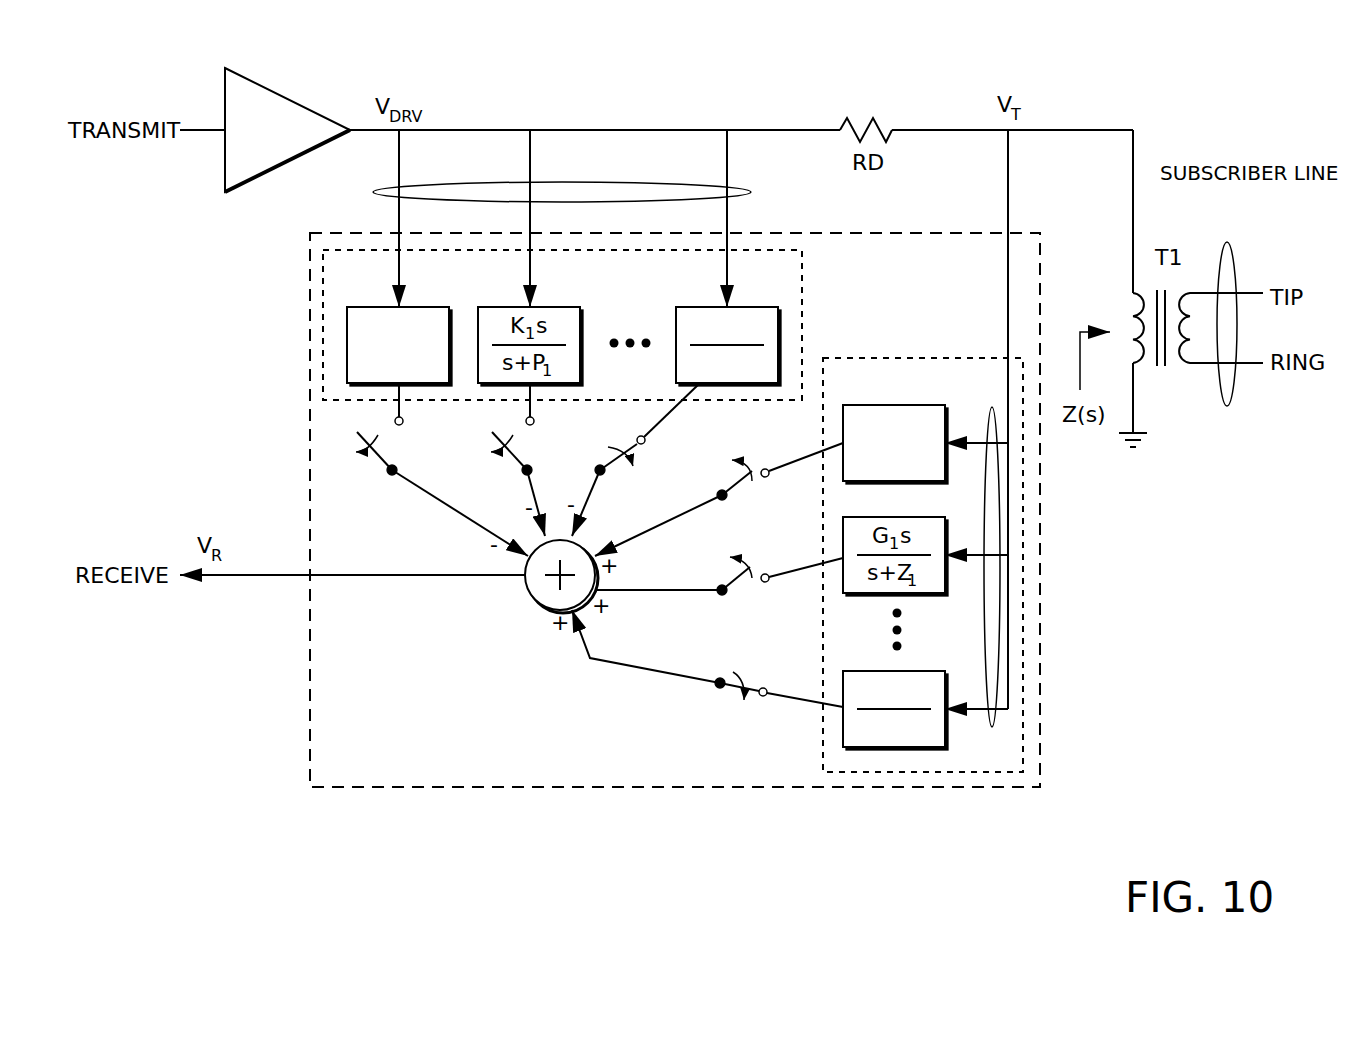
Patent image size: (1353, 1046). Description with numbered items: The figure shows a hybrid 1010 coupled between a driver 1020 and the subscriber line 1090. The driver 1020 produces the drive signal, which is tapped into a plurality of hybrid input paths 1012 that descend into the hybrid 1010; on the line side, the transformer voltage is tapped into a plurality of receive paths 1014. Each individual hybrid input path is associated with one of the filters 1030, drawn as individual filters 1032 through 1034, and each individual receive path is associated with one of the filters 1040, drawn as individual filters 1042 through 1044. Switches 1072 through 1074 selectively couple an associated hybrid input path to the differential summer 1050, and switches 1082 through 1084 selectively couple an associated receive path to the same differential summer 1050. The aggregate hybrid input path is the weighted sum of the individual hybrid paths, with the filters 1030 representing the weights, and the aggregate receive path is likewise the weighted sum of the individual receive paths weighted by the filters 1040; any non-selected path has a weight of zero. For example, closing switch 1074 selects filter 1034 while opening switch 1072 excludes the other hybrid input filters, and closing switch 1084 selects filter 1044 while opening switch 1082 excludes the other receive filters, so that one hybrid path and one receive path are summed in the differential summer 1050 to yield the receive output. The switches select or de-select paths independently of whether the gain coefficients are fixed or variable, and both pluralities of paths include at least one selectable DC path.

The hybrid 1010 is at (310, 452).
The hybrid input paths 1012 is at (755, 192).
The receive paths 1014 is at (992, 727).
The driver 1020 is at (253, 80).
The filters 1030 is at (803, 285).
The filter 1032 is at (406, 307).
The filter 1034 is at (737, 307).
The filters 1040 is at (887, 359).
The filter 1042 is at (913, 405).
The filter 1044 is at (905, 671).
The differential summer 1050 is at (532, 603).
The switch 1072 is at (391, 476).
The switch 1074 is at (595, 466).
The switch 1082 is at (716, 490).
The switch 1084 is at (718, 692).
The subscriber line 1090 is at (1228, 243).